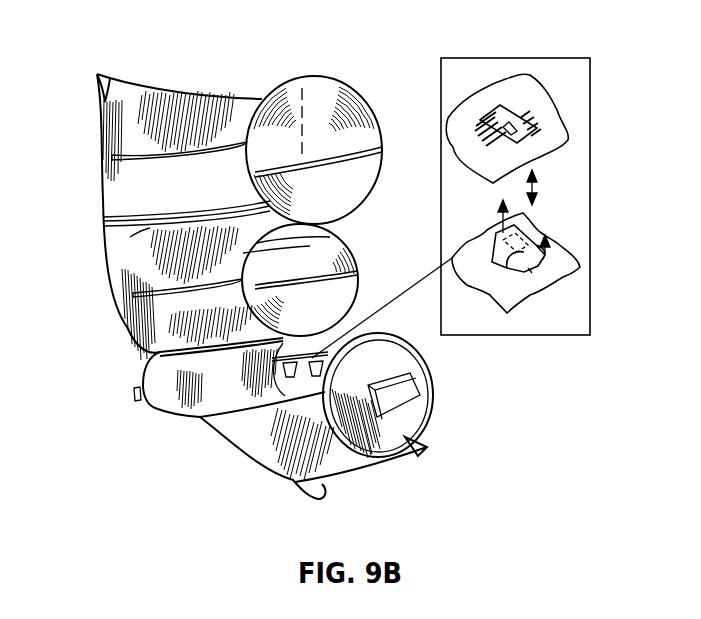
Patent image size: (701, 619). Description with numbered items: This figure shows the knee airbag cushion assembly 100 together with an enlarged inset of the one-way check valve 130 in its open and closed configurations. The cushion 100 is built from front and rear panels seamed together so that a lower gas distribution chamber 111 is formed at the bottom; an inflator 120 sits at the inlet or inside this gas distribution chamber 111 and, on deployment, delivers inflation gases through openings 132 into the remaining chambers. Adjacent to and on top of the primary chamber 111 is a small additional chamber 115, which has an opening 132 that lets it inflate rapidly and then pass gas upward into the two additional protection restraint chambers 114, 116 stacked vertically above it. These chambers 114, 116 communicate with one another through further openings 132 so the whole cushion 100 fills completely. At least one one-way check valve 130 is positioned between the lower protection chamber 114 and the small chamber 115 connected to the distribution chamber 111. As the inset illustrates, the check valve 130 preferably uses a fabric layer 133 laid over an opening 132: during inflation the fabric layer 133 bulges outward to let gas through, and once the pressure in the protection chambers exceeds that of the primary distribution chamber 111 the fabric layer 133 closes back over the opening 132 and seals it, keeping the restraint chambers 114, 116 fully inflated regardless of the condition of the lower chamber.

The knee airbag cushion assembly 100 is at (269, 283).
The gas distribution chamber 111 is at (266, 438).
The additional protection restraint chamber 114 is at (133, 297).
The small additional chamber 115 is at (173, 398).
The additional protection restraint chamber 116 is at (133, 123).
The inflator 120 is at (413, 392).
The one-way check valve 130 is at (558, 111).
The opening 132 is at (507, 127).
The fabric layer 133 is at (482, 117).